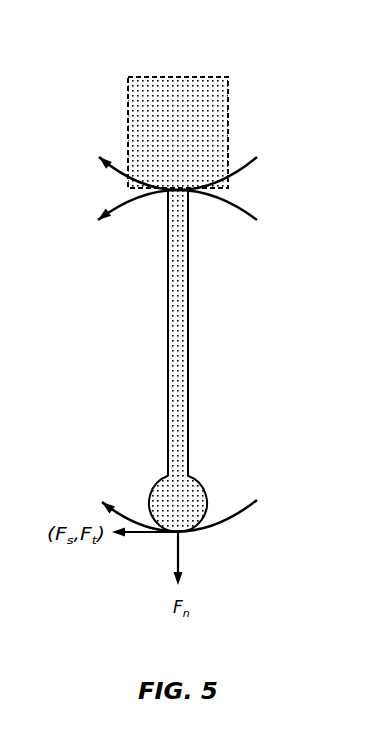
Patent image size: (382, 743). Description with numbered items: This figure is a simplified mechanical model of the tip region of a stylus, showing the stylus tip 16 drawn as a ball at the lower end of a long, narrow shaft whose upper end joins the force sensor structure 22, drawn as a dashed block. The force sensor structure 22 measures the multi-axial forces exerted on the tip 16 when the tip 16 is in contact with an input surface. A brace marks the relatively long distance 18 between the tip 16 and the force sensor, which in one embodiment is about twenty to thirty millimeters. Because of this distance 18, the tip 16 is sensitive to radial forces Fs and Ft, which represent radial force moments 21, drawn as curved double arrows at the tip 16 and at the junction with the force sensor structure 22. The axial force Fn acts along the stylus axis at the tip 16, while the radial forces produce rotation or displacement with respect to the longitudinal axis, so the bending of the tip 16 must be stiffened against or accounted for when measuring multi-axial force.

The force sensor structure 22 is at (178, 92).
The distance between tip and force sensor 18 is at (273, 212).
The tip 16 is at (192, 527).
The radial force moments 21 is at (245, 158).